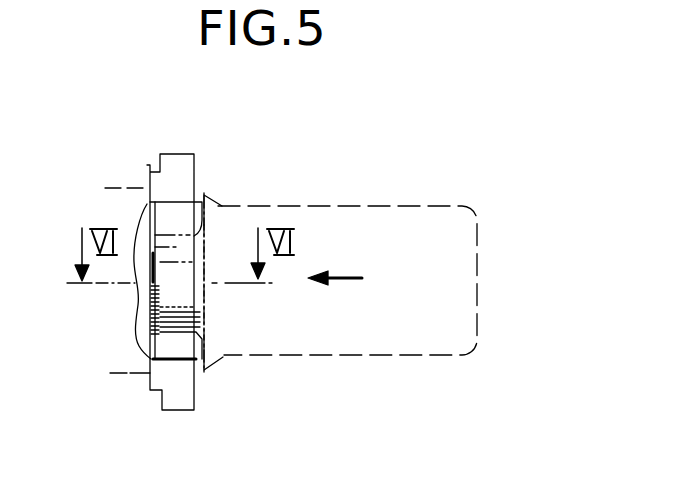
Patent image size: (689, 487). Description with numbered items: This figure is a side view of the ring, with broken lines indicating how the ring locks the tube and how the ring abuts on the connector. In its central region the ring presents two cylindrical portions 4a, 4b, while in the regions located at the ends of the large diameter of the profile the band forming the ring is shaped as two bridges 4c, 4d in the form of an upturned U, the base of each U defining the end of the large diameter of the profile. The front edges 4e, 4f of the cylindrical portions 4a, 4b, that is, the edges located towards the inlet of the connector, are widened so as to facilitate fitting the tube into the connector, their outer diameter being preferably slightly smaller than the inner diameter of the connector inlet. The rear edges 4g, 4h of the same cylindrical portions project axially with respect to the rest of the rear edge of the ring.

The cylindrical portion 4a is at (226, 329).
The cylindrical portion 4b is at (190, 300).
The bridge 4c is at (183, 163).
The bridge 4d is at (182, 397).
The front edge 4e is at (97, 297).
The front edge 4f is at (152, 292).
The rear edge 4g is at (246, 272).
The rear edge 4h is at (204, 252).